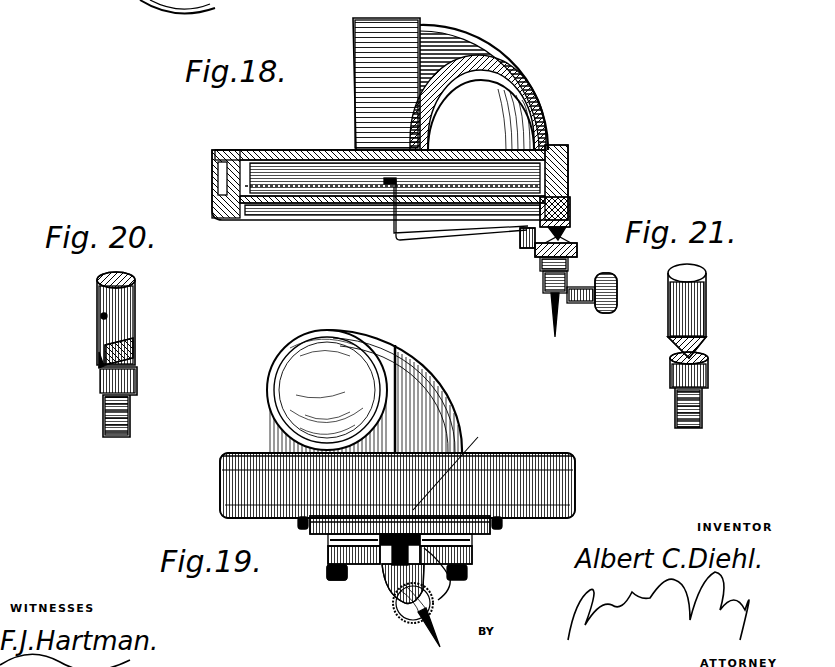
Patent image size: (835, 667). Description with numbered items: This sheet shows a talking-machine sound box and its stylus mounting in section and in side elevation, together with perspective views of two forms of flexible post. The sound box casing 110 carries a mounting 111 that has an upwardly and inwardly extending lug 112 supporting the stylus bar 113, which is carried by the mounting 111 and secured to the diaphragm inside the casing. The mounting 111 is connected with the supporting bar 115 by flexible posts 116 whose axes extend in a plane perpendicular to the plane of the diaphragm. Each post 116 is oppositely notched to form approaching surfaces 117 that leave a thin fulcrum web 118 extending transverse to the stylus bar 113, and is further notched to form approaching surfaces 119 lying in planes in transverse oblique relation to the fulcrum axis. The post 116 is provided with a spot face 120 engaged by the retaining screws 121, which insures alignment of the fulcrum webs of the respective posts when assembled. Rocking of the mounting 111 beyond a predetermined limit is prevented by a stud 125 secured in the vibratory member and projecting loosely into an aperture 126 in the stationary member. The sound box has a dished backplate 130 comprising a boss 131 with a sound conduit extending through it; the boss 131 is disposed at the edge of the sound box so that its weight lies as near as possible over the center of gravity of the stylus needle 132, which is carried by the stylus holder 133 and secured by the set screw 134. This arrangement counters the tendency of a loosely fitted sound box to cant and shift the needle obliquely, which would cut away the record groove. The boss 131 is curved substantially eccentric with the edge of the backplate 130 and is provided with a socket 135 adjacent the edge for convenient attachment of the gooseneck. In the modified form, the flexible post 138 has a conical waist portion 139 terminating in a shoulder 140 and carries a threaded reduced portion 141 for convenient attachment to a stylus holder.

In FIG. 18, the sound box casing 110 is at (213, 200).
In FIG. 19, the sound box casing 110 is at (575, 482).
In FIG. 18, the mounting 111 is at (578, 252).
In FIG. 19, the mounting 111 is at (440, 580).
In FIG. 18, the lug 112 is at (530, 243).
In FIG. 19, the lug 112 is at (385, 565).
In FIG. 18, the stylus bar 113 is at (433, 243).
In FIG. 19, the stylus bar 113 is at (463, 466).
In FIG. 18, the supporting bar 115 is at (562, 215).
In FIG. 19, the supporting bar 115 is at (472, 541).
In FIG. 18, the flexible posts 116 is at (560, 230).
In FIG. 20, the flexible posts 116 is at (136, 310).
In FIG. 19, the flexible posts 116 is at (472, 558).
In FIG. 18, the approaching surfaces 117 is at (556, 242).
In FIG. 20, the approaching surfaces 117 is at (133, 348).
In FIG. 18, the fulcrum web 118 is at (538, 260).
In FIG. 20, the fulcrum web 118 is at (100, 373).
In FIG. 20, the approaching surfaces 119 is at (100, 362).
In FIG. 20, the spot face 120 is at (100, 318).
In FIG. 18, the retaining screws 121 is at (562, 192).
In FIG. 19, the retaining screws 121 is at (298, 529).
In FIG. 19, the stud 125 is at (332, 580).
In FIG. 19, the aperture 126 is at (287, 580).
In FIG. 18, the backplate 130 is at (318, 150).
In FIG. 19, the backplate 130 is at (240, 455).
In FIG. 18, the boss 131 is at (548, 118).
In FIG. 19, the boss 131 is at (445, 393).
In FIG. 18, the stylus needle 132 is at (553, 322).
In FIG. 19, the stylus needle 132 is at (429, 627).
In FIG. 18, the stylus holder 133 is at (541, 282).
In FIG. 19, the stylus holder 133 is at (398, 578).
In FIG. 18, the set screw 134 is at (618, 302).
In FIG. 19, the set screw 134 is at (395, 607).
In FIG. 19, the socket 135 is at (270, 390).
In FIG. 21, the flexible post 138 is at (704, 292).
In FIG. 21, the conical waist portion 139 is at (700, 352).
In FIG. 21, the shoulder 140 is at (710, 360).
In FIG. 21, the threaded reduced portion 141 is at (703, 403).